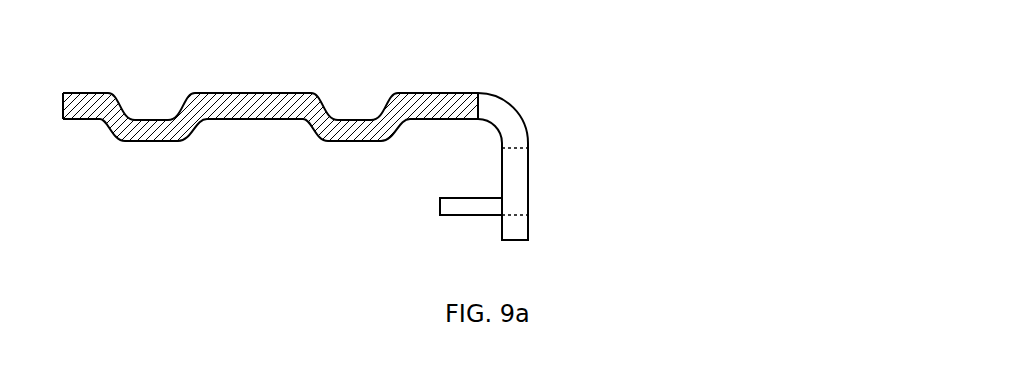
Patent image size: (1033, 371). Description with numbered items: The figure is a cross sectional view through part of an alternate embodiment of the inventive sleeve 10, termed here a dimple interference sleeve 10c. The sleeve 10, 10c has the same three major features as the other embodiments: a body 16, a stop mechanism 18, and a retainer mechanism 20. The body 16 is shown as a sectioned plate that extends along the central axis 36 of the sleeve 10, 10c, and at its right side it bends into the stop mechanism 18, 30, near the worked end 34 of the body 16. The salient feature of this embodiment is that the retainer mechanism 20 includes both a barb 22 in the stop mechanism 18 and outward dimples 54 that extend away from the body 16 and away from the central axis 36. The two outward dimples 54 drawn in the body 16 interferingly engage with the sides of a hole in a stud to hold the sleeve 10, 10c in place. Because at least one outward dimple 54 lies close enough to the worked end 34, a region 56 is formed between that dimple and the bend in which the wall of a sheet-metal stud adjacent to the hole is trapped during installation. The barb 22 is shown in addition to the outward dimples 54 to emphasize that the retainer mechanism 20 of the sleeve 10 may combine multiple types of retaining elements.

The sleeve 10 is at (393, 137).
The dimple interference sleeve 10c is at (632, 53).
The body 16 is at (227, 119).
The stop mechanism 18 is at (576, 196).
The retainer mechanism 20 is at (301, 177).
The barb 22 is at (457, 217).
The bent leg 30 is at (528, 221).
The worked end 34 is at (556, 177).
The central axis 36 is at (555, 40).
The outward dimple 54 is at (147, 143).
The region 56 is at (487, 140).